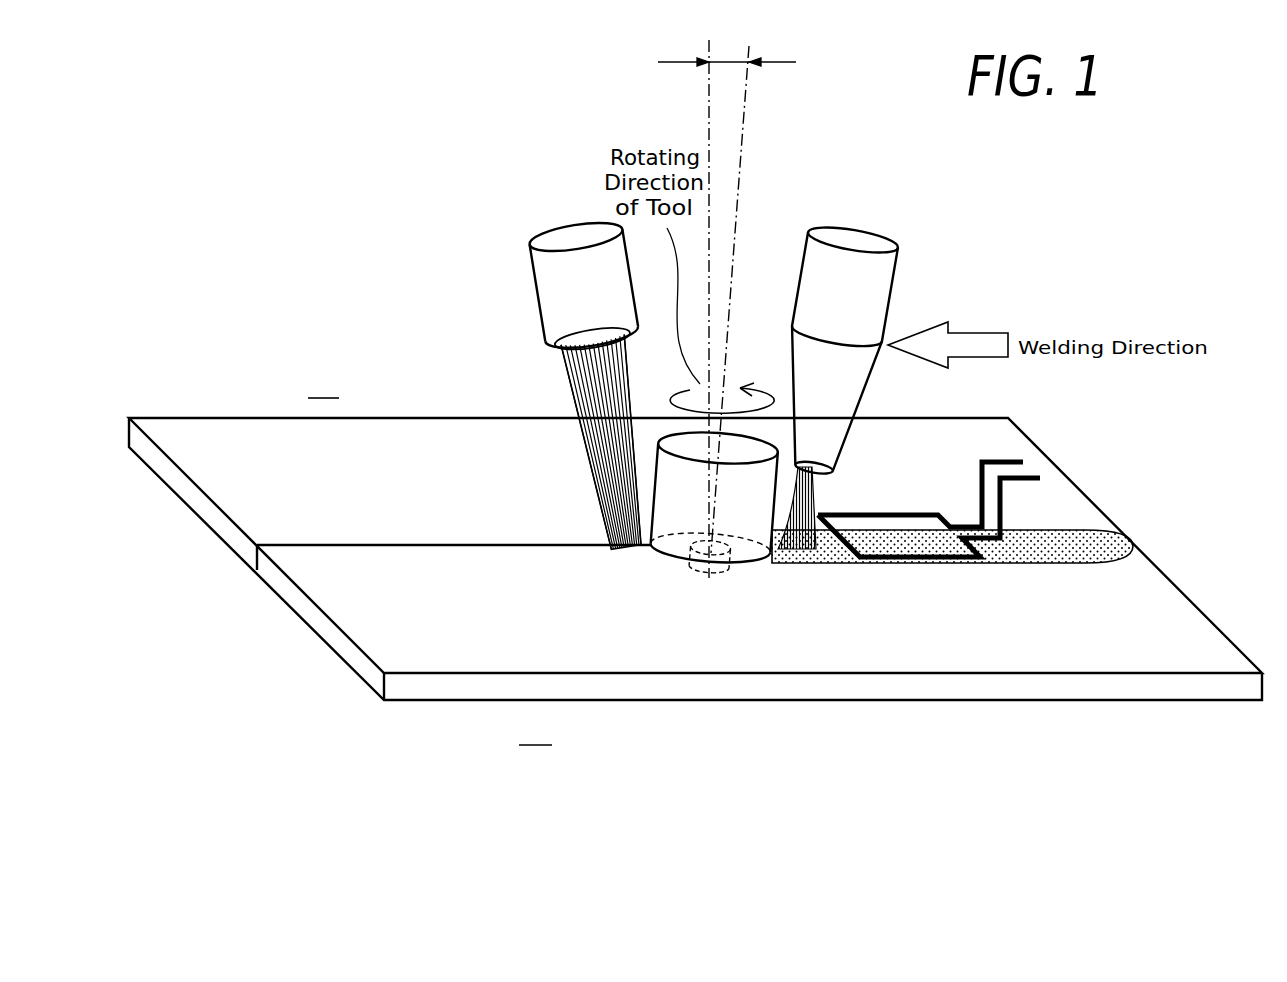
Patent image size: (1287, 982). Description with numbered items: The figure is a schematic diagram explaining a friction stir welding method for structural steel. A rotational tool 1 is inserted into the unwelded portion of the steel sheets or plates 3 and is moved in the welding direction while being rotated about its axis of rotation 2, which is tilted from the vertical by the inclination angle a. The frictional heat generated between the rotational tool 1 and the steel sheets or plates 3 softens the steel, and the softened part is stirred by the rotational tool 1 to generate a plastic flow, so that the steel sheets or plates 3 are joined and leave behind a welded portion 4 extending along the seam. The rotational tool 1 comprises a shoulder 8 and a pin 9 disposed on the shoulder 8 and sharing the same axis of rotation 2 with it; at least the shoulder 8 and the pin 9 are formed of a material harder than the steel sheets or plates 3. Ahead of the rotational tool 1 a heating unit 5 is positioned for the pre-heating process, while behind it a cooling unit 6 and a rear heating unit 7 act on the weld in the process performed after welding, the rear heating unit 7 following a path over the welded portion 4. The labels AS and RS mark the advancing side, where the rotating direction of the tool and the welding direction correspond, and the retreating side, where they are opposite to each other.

The rotational tool 1 is at (680, 545).
The axis of rotation 2 is at (742, 135).
The steel sheets or plates 3 is at (277, 493).
The welded portion 4 is at (1060, 536).
The heating unit 5 is at (548, 291).
The cooling unit 6 is at (878, 283).
The rear heating unit 7 is at (900, 515).
The shoulder of the rotational tool 8 is at (655, 548).
The pin of the rotational tool 9 is at (722, 567).